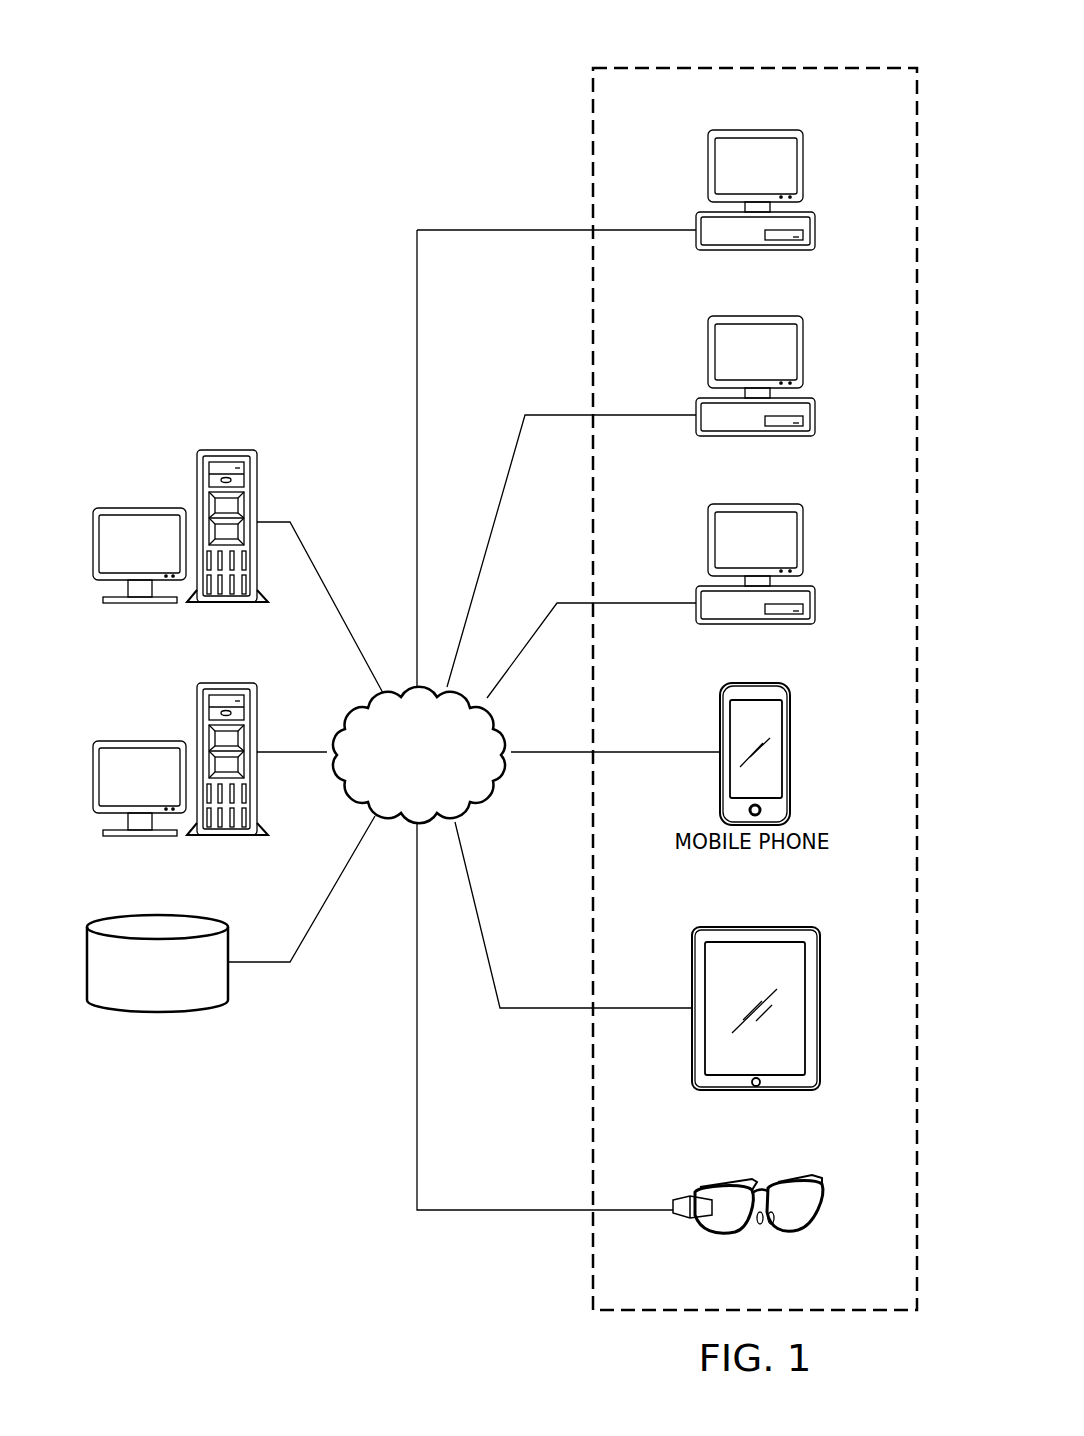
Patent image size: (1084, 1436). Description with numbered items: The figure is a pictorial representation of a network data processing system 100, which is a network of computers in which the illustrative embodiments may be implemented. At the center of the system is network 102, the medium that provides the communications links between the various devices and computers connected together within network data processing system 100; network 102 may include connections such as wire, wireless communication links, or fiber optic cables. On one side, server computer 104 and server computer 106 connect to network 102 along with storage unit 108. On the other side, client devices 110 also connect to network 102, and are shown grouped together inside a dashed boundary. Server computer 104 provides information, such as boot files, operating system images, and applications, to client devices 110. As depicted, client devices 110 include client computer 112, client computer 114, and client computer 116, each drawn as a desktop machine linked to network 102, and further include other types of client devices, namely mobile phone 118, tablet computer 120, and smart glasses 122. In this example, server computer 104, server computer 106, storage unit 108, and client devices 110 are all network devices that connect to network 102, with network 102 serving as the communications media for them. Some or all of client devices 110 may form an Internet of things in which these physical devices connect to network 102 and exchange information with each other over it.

The network data processing system 100 is at (276, 320).
The network 102 is at (396, 787).
The server computer 104 is at (140, 508).
The server computer 106 is at (140, 741).
The storage unit 108 is at (155, 1011).
The client devices 110 is at (800, 60).
The client computer 112 is at (803, 165).
The client computer 114 is at (803, 351).
The client computer 116 is at (803, 538).
The mobile phone 118 is at (790, 770).
The tablet computer 120 is at (820, 1020).
The smart glasses 122 is at (820, 1205).